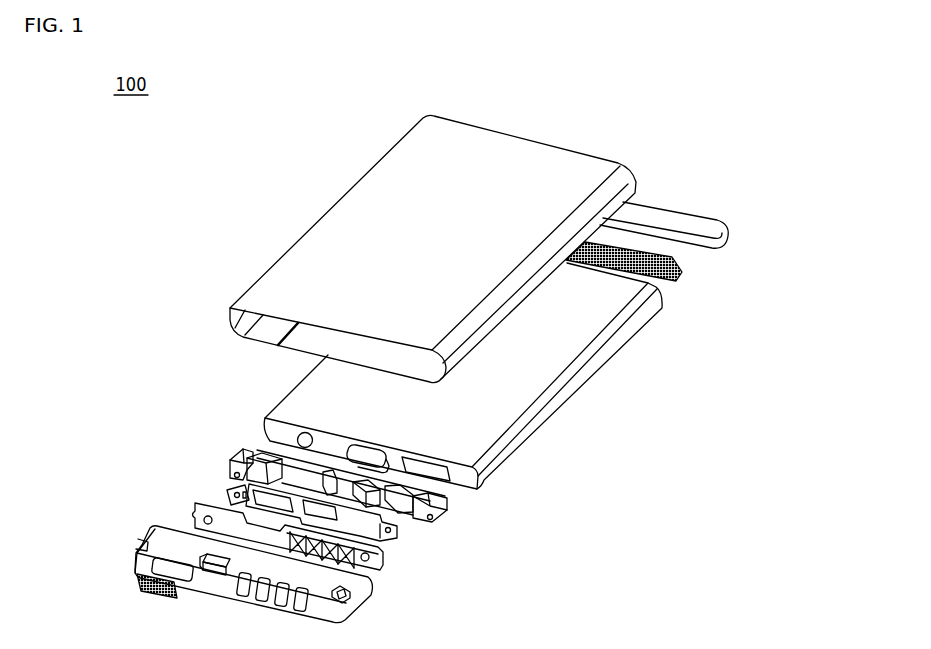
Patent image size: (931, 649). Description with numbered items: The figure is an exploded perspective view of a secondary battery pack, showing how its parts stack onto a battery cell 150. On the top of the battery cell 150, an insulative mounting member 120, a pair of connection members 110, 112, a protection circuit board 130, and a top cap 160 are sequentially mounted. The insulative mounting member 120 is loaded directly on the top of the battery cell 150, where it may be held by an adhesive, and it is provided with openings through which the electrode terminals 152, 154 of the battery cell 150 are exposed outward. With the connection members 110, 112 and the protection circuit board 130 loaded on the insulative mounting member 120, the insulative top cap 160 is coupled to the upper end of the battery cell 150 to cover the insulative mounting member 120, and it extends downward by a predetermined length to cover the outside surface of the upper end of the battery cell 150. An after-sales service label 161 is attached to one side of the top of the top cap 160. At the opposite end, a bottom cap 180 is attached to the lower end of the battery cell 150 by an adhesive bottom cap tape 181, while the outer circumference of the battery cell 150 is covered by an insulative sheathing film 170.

The connection member 110 is at (313, 505).
The connection member 112 is at (227, 490).
The insulative mounting member 120 is at (237, 453).
The protection circuit board 130 is at (385, 555).
The battery cell 150 is at (497, 376).
The electrode terminal 152 is at (370, 460).
The electrode terminal 154 is at (425, 470).
The top cap 160 is at (204, 552).
The after-sales service label 161 is at (137, 578).
The sheathing film 170 is at (343, 192).
The bottom cap 180 is at (683, 207).
The bottom cap tape 181 is at (683, 272).